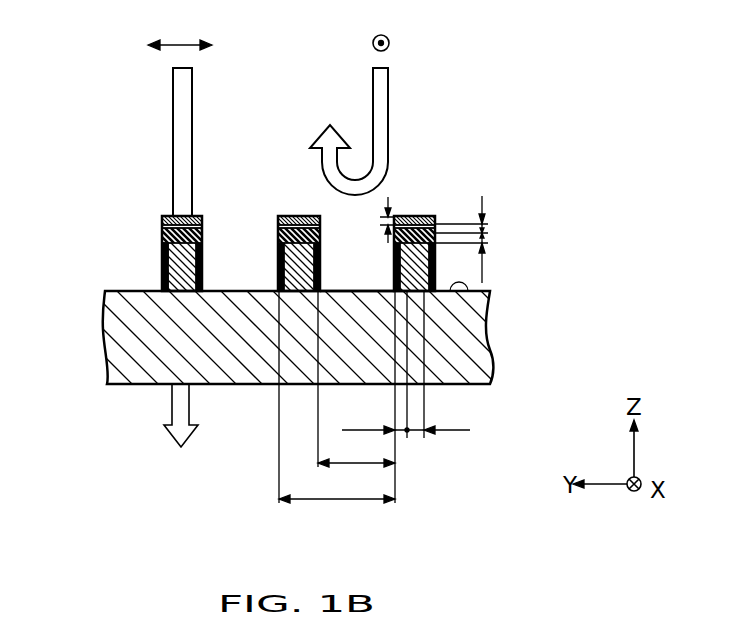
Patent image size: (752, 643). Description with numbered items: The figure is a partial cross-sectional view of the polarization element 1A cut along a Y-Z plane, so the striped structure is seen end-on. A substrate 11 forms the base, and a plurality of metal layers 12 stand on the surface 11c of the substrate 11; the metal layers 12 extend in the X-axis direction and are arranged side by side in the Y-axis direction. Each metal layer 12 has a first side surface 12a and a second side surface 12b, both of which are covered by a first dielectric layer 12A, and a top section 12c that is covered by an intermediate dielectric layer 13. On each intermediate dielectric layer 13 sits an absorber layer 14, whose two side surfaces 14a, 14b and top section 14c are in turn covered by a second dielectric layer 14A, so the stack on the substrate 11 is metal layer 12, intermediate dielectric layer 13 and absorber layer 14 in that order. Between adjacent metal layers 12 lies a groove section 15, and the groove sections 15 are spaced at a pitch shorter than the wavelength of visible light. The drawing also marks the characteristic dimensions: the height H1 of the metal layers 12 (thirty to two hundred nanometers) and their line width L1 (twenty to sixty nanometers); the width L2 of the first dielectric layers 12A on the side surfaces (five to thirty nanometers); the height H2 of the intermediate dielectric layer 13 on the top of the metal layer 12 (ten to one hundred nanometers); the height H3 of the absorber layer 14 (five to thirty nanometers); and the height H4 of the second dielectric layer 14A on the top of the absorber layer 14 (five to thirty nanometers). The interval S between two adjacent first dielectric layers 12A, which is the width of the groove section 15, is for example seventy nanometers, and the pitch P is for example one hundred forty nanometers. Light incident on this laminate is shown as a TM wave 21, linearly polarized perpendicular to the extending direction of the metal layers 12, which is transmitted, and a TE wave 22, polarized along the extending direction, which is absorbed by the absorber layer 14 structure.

The polarization element 1A is at (512, 175).
The substrate 11 is at (482, 337).
The surface of the substrate 11c is at (488, 307).
The metal layer 12 is at (237, 232).
The first dielectric layer 12A is at (162, 259).
The first side surface 12a is at (162, 279).
The second side surface 12b is at (200, 268).
The top section 12c is at (200, 240).
The intermediate dielectric layer 13 is at (162, 236).
The absorber layer 14 is at (178, 216).
The second dielectric layer 14A is at (163, 216).
The side surface of the absorber layer 14a is at (280, 222).
The side surface of the absorber layer 14b is at (320, 223).
The top section of the absorber layer 14c is at (284, 216).
The groove section 15 is at (353, 289).
The TM wave 21 is at (183, 98).
The TE wave 22 is at (383, 98).
The height of the metal layers H1 is at (482, 265).
The height of the intermediate dielectric layer H2 is at (488, 233).
The height of the absorber layer H3 is at (488, 224).
The height of the second dielectric layer H4 is at (388, 198).
The width of the metal layer L1 is at (438, 364).
The width of the first dielectric layer L2 is at (375, 364).
The interval S is at (356, 379).
The pitch P is at (337, 397).